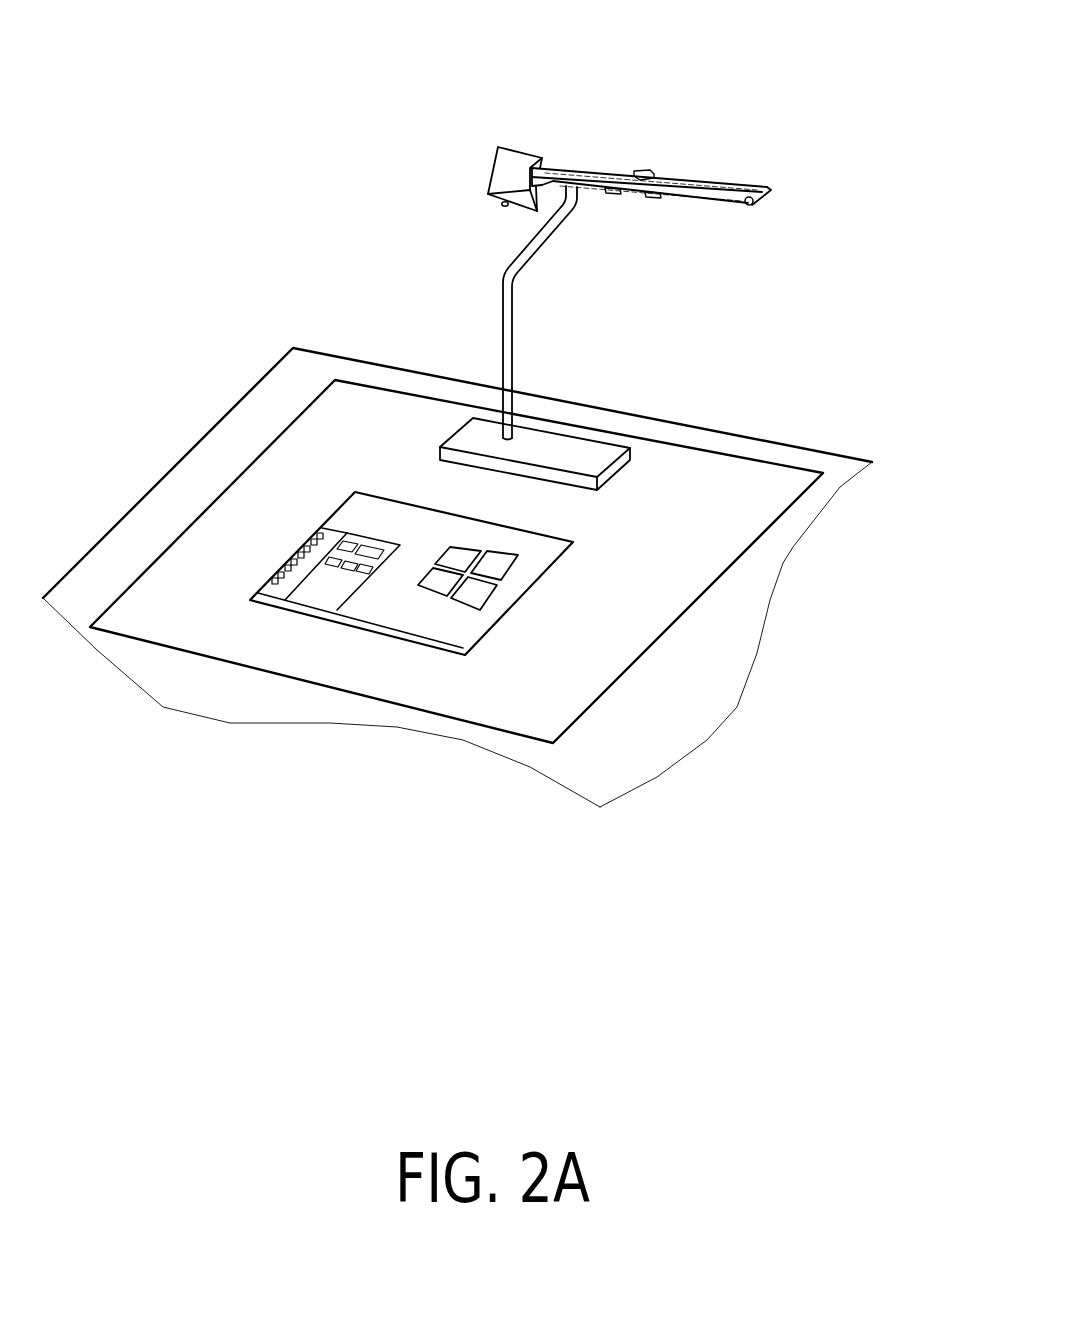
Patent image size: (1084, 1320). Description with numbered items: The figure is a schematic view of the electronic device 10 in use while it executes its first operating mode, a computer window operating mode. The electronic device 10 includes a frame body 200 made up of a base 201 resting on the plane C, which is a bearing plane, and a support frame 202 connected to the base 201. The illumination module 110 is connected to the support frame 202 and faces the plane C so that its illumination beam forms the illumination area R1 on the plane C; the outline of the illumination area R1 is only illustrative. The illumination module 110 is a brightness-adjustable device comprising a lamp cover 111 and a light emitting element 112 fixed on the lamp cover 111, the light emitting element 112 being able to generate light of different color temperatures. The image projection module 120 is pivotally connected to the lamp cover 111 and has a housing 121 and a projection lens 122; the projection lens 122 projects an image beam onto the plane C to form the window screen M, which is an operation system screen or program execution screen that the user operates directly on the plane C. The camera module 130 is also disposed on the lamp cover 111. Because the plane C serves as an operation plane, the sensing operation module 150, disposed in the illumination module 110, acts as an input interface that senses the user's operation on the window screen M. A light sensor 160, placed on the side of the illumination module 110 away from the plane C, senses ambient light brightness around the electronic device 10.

The electronic device 10 is at (457, 128).
The illumination module 110 is at (746, 203).
The lamp cover 111 is at (748, 184).
The light emitting element 112 is at (753, 202).
The image projection module 120 is at (503, 127).
The housing 121 is at (520, 158).
The projection lens 122 is at (500, 205).
The camera module 130 is at (653, 197).
The sensing operation module 150 is at (619, 196).
The light sensor 160 is at (645, 167).
The frame body 200 is at (366, 243).
The base 201 is at (483, 438).
The support frame 202 is at (500, 307).
The plane C is at (832, 470).
The illumination area R1 is at (758, 540).
The window screen M is at (527, 593).